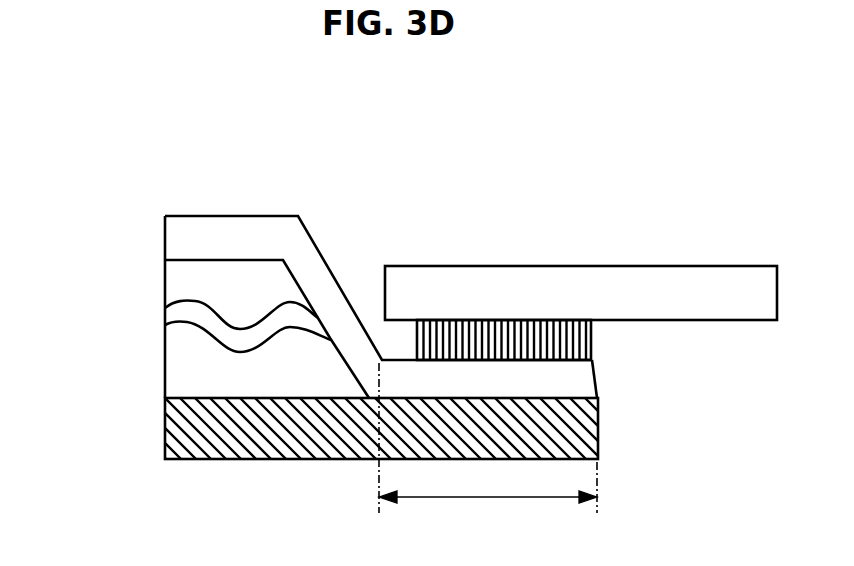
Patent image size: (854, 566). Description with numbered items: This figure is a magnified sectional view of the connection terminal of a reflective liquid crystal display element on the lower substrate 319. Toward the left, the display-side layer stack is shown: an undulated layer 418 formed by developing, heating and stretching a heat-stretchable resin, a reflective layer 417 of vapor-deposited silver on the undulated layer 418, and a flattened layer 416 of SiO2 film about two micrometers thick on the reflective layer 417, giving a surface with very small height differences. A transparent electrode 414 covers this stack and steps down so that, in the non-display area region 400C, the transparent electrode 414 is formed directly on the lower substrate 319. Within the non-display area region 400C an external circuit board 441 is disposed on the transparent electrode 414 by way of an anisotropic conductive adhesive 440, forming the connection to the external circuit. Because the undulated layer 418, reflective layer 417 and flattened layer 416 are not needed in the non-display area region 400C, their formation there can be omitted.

The transparent electrode 414 is at (178, 233).
The flattened layer 416 is at (178, 283).
The reflective layer 417 is at (178, 321).
The undulated layer 418 is at (178, 352).
The lower substrate 319 is at (178, 428).
The external circuit board 441 is at (575, 287).
The anisotropic conductive adhesive 440 is at (573, 336).
The non-display area region 400C is at (488, 438).